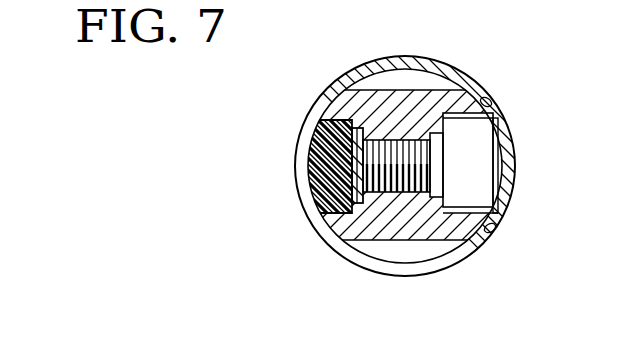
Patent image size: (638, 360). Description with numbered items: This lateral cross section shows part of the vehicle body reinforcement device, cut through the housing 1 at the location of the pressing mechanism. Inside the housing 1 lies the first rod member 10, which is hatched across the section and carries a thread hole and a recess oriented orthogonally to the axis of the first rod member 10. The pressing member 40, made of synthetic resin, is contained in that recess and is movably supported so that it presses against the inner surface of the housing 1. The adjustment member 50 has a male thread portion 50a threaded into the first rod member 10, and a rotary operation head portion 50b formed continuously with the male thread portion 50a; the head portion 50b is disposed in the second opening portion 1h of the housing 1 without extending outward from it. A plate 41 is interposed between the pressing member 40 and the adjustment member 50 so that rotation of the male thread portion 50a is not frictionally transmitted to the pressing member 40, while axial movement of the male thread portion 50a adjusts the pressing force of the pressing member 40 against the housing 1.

The housing 1 is at (454, 60).
The second opening portion 1h is at (489, 101).
The first rod member 10 is at (360, 102).
The pressing member 40 is at (328, 164).
The plate 41 is at (358, 203).
The adjustment member 50 is at (504, 159).
The male thread portion 50a is at (390, 193).
The rotary operation head portion 50b is at (486, 140).